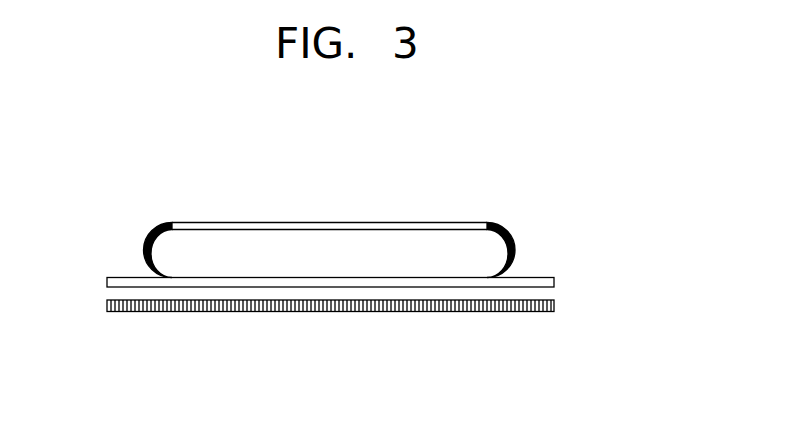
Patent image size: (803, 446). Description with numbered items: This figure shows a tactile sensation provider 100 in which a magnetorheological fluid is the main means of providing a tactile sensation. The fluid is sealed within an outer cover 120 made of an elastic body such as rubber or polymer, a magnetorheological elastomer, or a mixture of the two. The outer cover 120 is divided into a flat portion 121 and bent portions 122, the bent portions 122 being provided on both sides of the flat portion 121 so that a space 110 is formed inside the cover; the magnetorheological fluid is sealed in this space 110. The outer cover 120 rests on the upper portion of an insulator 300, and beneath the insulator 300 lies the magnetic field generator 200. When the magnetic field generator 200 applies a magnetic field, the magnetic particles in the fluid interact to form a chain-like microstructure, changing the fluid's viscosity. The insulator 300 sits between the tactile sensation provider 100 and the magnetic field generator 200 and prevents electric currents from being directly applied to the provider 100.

The tactile sensation provider 100 is at (145, 224).
The space 110 is at (279, 253).
The outer cover 120 is at (518, 160).
The flat portion 121 is at (433, 222).
The bent portions 122 is at (505, 222).
The magnetic field generator 200 is at (482, 311).
The insulator 300 is at (537, 280).